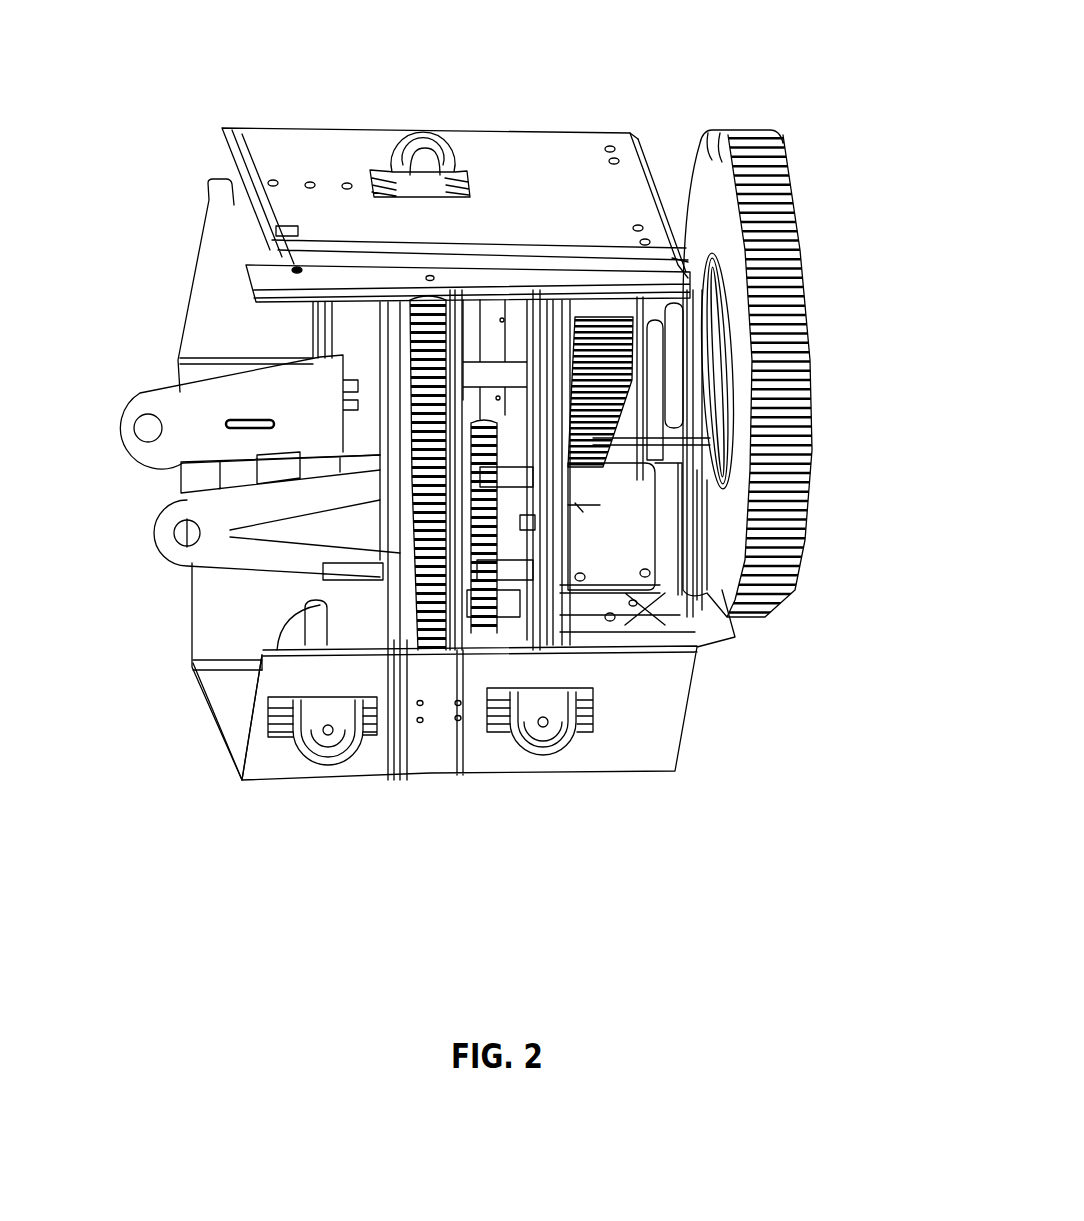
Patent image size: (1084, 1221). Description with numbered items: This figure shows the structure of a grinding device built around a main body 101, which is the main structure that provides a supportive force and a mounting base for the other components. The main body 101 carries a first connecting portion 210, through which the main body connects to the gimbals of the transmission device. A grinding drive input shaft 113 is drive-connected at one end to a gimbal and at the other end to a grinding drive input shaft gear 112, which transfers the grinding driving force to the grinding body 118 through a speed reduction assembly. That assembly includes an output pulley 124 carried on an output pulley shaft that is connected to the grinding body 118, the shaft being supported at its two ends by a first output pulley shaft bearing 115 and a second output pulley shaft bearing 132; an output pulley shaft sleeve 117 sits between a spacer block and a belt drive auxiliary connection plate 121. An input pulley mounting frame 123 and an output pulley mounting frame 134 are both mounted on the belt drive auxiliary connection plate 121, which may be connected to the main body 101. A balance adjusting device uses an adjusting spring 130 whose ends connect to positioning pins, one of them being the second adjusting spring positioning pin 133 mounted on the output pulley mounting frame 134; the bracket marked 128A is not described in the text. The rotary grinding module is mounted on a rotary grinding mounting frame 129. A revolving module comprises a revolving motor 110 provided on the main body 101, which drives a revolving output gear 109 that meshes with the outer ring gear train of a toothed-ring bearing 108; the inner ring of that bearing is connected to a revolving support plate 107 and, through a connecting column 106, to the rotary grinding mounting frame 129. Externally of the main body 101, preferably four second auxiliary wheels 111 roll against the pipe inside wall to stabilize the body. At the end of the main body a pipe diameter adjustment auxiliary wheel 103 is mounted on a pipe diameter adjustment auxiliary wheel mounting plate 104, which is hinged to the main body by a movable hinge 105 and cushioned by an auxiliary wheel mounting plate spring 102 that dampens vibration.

The main body 101 is at (218, 308).
The auxiliary wheel mounting plate spring 102 is at (295, 268).
The pipe diameter adjustment auxiliary wheel 103 is at (392, 134).
The pipe diameter adjustment auxiliary wheel mounting plate 104 is at (520, 180).
The movable hinge 105 is at (673, 260).
The connecting column 106 is at (548, 595).
The revolving support plate 107 is at (485, 592).
The toothed-ring bearing 108 is at (503, 590).
The revolving output gear 109 is at (455, 585).
The revolving motor 110 is at (353, 633).
The second auxiliary wheels 111 is at (313, 718).
The grinding drive input shaft gear 112 is at (413, 480).
The grinding drive input shaft 113 is at (188, 483).
The first output pulley shaft bearing 115 is at (737, 372).
The output pulley shaft sleeve 117 is at (740, 383).
The grinding body 118 is at (635, 343).
The belt drive auxiliary connection plate 121 is at (705, 490).
The input pulley mounting frame 123 is at (677, 526).
The output pulley 124 is at (658, 393).
The mounting bracket 128A is at (575, 503).
The rotary grinding mounting frame 129 is at (527, 520).
The adjusting spring 130 is at (593, 443).
The second output pulley shaft bearing 132 is at (553, 353).
The second adjusting spring positioning pin 133 is at (640, 383).
The output pulley mounting frame 134 is at (678, 410).
The first connecting portion 210 is at (207, 432).